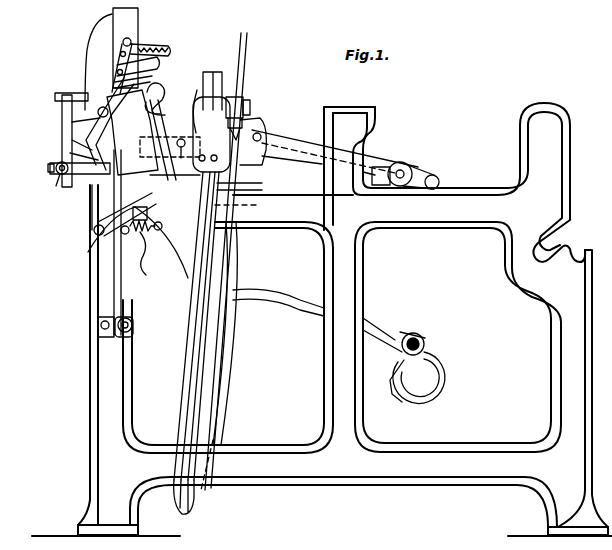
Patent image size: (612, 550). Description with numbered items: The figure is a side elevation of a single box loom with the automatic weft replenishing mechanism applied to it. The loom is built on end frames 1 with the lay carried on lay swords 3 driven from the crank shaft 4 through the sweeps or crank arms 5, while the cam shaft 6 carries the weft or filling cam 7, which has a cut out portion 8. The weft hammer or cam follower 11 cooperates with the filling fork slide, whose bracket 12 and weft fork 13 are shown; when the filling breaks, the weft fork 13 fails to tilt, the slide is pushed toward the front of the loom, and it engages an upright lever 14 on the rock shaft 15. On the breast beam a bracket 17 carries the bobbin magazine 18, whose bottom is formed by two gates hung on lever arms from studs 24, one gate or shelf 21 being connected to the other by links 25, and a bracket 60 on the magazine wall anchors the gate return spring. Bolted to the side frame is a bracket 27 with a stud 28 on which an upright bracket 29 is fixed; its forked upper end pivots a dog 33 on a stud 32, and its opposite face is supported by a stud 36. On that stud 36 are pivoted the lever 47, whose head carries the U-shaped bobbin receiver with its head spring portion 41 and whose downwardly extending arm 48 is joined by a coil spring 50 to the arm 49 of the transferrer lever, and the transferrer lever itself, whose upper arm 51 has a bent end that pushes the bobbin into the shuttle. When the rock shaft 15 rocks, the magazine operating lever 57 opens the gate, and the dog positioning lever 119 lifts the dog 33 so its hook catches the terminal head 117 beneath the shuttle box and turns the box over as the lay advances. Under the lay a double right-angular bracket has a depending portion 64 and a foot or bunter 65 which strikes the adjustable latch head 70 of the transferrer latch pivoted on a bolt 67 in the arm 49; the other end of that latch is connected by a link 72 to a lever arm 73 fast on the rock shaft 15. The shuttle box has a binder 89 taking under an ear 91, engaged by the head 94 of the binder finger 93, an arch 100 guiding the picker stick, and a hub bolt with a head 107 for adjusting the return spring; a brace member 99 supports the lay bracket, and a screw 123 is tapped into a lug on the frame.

The end frame 1 is at (583, 352).
The lay sword 3 is at (224, 258).
The crank shaft 4 is at (401, 164).
The sweep or crank arm 5 is at (283, 140).
The cam shaft 6 is at (414, 338).
The weft or filling cam 7 is at (443, 393).
The cut out portion 8 is at (395, 382).
The weft hammer or weft cam follower 11 is at (276, 300).
The filling fork slide bracket 12 is at (160, 90).
The weft fork 13 is at (158, 112).
The upright lever 14 is at (55, 97).
The rock shaft 15 is at (56, 176).
The bracket 17 is at (98, 38).
The bobbin magazine 18 is at (132, 20).
The gate or shelf 21 is at (155, 74).
The stud 24 is at (133, 42).
The link 25 is at (158, 62).
The bracket 27 is at (98, 322).
The stud 28 is at (132, 327).
The upright bracket 29 is at (122, 296).
The stud 32 is at (181, 154).
The dog 33 is at (160, 137).
The stud 36 is at (132, 132).
The head spring portion 41 is at (112, 97).
The lever 47 is at (143, 138).
The downwardly extending arm 48 is at (160, 232).
The downwardly extending arm 49 is at (112, 228).
The coil spring 50 is at (150, 255).
The upper arm 51 is at (72, 122).
The magazine operating lever 57 is at (72, 140).
The bracket 60 is at (170, 48).
The depending portion 64 is at (256, 183).
The foot or bunter 65 is at (245, 205).
The bolt 67 is at (100, 228).
The adjustable latch head 70 is at (158, 178).
The link 72 is at (96, 205).
The lever arm 73 is at (72, 178).
The binder 89 is at (244, 106).
The ear 91 is at (243, 100).
The binder finger 93 is at (262, 150).
The head 94 is at (246, 112).
The brace member 99 is at (185, 362).
The arch 100 is at (208, 72).
The head 107 is at (216, 106).
The terminal head 117 is at (211, 131).
The dog positioning lever 119 is at (72, 153).
The screw 123 is at (130, 225).